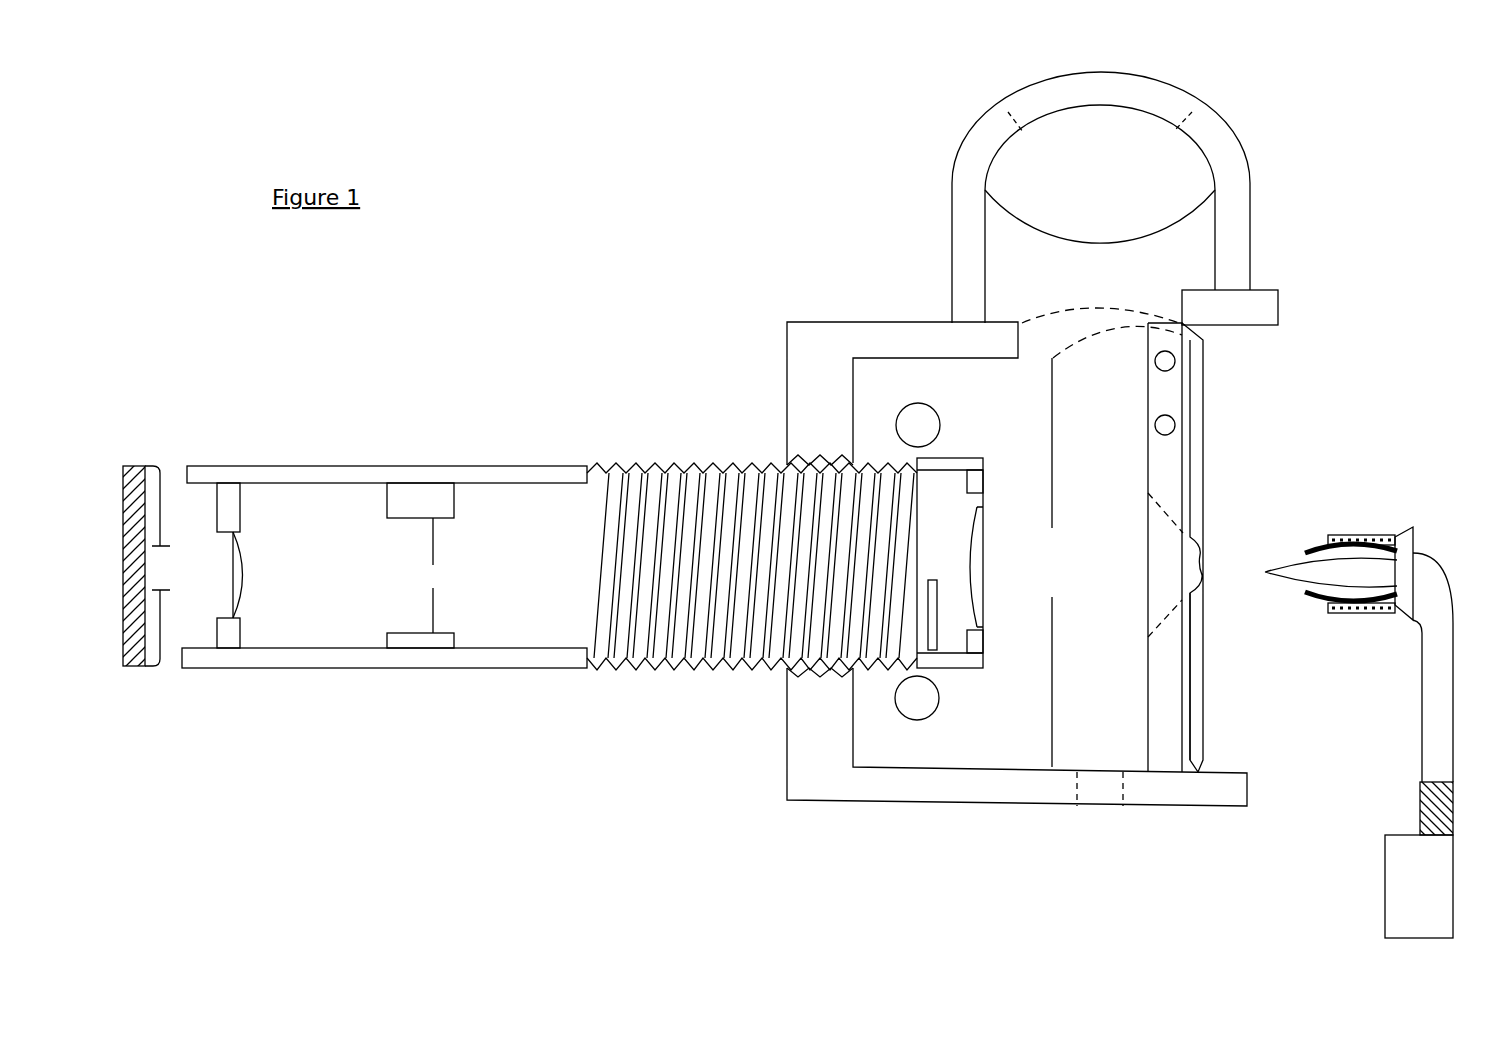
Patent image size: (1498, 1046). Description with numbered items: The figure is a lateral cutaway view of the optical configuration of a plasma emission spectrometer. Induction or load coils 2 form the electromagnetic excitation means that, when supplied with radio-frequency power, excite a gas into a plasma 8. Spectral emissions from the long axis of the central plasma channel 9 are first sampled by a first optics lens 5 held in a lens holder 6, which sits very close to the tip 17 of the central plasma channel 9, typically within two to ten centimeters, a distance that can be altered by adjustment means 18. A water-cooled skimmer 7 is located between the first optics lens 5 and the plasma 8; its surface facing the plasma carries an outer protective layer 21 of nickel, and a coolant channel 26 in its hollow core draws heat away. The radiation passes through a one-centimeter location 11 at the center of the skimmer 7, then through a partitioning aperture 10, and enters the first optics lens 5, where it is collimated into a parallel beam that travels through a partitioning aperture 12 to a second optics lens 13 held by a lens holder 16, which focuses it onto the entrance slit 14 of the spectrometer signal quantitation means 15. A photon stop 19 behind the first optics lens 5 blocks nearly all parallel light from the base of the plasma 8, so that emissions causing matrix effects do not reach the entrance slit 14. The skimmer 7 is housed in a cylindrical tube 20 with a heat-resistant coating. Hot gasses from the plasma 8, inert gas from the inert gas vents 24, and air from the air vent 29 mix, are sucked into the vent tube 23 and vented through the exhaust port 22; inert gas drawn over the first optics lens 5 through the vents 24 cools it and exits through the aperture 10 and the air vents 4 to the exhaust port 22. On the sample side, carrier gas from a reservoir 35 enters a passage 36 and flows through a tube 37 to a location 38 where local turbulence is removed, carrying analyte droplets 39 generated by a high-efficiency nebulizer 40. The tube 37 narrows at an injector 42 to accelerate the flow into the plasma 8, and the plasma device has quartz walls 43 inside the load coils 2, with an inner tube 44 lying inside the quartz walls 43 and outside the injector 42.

The induction coils 2 is at (1348, 540).
The air vents 4 is at (1160, 393).
The first optics lens 5 is at (988, 540).
The lens holder 6 is at (975, 648).
The water-cooled skimmer 7 is at (1192, 665).
The plasma 8 is at (1295, 585).
The central plasma channel 9 is at (1313, 575).
The partitioning aperture 10 is at (1052, 662).
The location 11 is at (1165, 565).
The partitioning aperture 12 is at (433, 615).
The second optics lens 13 is at (243, 590).
The entrance slit 14 is at (162, 466).
The spectrometer signal quantitation means 15 is at (135, 466).
The lens holder 16 is at (240, 507).
The tip 17 is at (1268, 570).
The adjustment means 18 is at (645, 467).
The photon stop 19 is at (932, 582).
The cylindrical tube 20 is at (787, 422).
The outer protective layer 21 is at (1205, 410).
The exhaust port 22 is at (1112, 162).
The vent tube 23 is at (1092, 277).
The inert gas vents 24 is at (905, 408).
The coolant channel 26 is at (1172, 432).
The air vent 29 is at (1102, 797).
The reservoir 35 is at (1419, 886).
The passage 36 is at (1420, 793).
The tube 37 is at (1435, 695).
The location 38 is at (1432, 586).
The analyte droplets 39 is at (1383, 540).
The high-efficiency nebulizer 40 is at (1407, 608).
The injector 42 is at (1377, 573).
The quartz walls 43 is at (1318, 547).
The inner tube 44 is at (1385, 577).